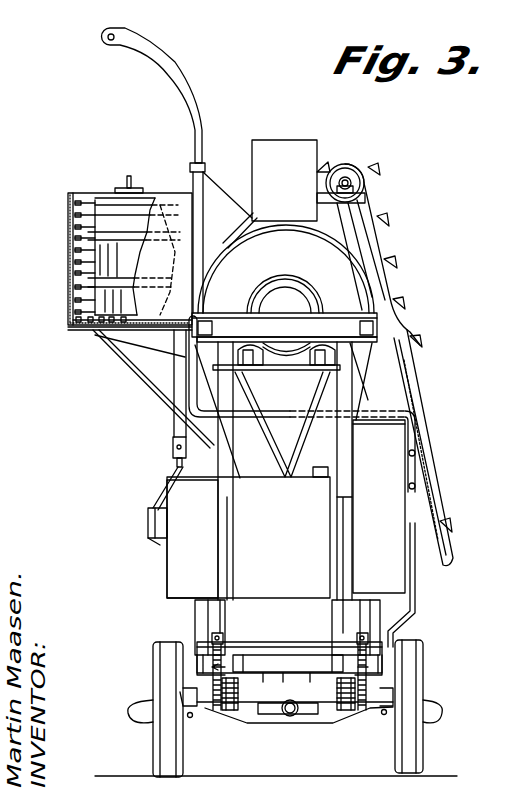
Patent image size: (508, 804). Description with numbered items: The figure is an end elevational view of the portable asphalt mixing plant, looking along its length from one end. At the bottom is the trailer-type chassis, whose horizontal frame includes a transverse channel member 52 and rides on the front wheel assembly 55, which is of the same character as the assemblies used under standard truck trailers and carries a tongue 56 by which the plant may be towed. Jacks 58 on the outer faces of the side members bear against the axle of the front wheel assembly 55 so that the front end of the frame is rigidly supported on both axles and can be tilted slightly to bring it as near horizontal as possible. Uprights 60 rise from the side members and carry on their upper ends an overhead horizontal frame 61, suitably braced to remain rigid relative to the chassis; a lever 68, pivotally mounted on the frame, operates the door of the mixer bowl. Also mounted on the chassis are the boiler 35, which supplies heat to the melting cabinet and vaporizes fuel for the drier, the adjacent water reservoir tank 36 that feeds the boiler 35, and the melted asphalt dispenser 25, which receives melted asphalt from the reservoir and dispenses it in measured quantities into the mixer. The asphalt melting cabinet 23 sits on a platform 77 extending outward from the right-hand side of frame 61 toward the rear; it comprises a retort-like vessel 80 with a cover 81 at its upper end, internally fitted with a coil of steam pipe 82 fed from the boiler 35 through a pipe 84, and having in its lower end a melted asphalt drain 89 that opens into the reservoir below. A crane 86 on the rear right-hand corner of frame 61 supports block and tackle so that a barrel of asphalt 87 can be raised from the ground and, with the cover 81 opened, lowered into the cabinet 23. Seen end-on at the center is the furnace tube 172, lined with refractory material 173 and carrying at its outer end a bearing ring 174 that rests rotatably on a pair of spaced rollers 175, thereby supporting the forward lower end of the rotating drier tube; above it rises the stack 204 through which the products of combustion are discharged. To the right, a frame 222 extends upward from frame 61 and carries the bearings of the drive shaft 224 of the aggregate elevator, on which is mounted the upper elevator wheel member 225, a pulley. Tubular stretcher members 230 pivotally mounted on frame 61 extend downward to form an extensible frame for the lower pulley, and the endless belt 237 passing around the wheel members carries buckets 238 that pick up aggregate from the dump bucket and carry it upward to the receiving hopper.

The asphalt melting cabinet 23 is at (62, 208).
The melted asphalt dispenser 25 is at (144, 527).
The boiler 35 is at (174, 556).
The water reservoir tank 36 is at (259, 574).
The transverse channel member 52 is at (294, 660).
The front wheel assembly 55 is at (412, 752).
The tongue 56 is at (290, 717).
The jacks 58 is at (212, 670).
The uprights 60 is at (345, 483).
The horizontal frame 61 is at (395, 330).
The lever 68 is at (416, 598).
The platform 77 is at (116, 352).
The retort-like vessel 80 is at (72, 268).
The cover 81 is at (97, 192).
The coil of steam pipe 82 is at (72, 238).
The pipe 84 is at (185, 392).
The crane 86 is at (200, 105).
The barrel of asphalt 87 is at (110, 268).
The melted asphalt drain 89 is at (165, 343).
The furnace tube 172 is at (313, 306).
The refractory material 173 is at (299, 293).
The bearing ring 174 is at (281, 278).
The rollers 175 is at (313, 352).
The stack 204 is at (297, 141).
The frame 222 is at (355, 214).
The drive shaft 224 is at (358, 184).
The upper elevator wheel member 225 is at (352, 173).
The tubular stretcher members 230 is at (432, 452).
The endless belt 237 is at (410, 380).
The buckets 238 is at (398, 264).